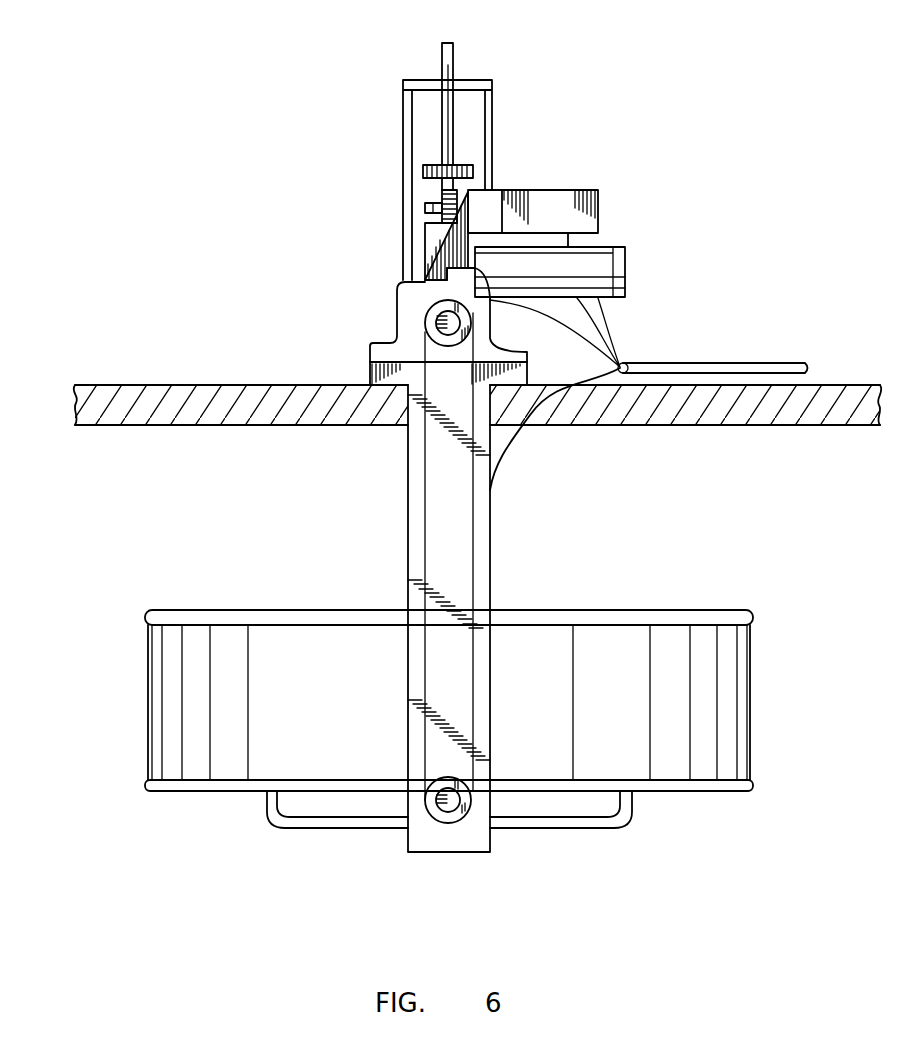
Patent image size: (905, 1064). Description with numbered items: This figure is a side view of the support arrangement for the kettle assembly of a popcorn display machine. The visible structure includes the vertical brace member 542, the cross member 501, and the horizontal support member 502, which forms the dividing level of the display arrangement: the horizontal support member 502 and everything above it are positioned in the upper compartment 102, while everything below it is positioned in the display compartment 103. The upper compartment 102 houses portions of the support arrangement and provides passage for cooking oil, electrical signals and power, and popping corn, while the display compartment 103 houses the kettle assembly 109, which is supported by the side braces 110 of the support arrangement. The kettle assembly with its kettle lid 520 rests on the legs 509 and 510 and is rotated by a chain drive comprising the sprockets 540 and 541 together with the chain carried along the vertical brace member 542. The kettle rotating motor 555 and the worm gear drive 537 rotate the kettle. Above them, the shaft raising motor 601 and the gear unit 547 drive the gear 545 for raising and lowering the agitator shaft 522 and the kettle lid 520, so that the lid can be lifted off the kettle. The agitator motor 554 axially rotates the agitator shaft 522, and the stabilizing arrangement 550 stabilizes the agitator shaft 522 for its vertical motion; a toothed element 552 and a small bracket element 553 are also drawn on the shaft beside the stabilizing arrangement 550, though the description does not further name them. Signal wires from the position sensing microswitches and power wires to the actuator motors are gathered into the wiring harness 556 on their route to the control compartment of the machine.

The upper compartment 102 is at (118, 270).
The display compartment 103 is at (118, 527).
The kettle assembly 109 is at (183, 700).
The side braces 110 is at (418, 853).
The cross member 501 is at (370, 370).
The horizontal support member 502 is at (165, 386).
The kettle assembly leg 509 is at (613, 823).
The kettle assembly leg 510 is at (278, 820).
The kettle lid 520 is at (588, 610).
The agitator shaft 522 is at (440, 62).
The worm gear drive 537 is at (397, 278).
The sprocket 540 is at (397, 312).
The sprocket 541 is at (450, 823).
The vertical brace member 542 is at (427, 576).
The gear 545 is at (443, 187).
The gear unit 547 is at (495, 190).
The stabilizing arrangement 550 is at (403, 87).
The gear 552 is at (425, 172).
The bracket 553 is at (422, 206).
The agitator motor 554 is at (422, 250).
The kettle rotating motor 555 is at (627, 282).
The wiring harness 556 is at (685, 363).
The shaft raising motor 601 is at (560, 190).